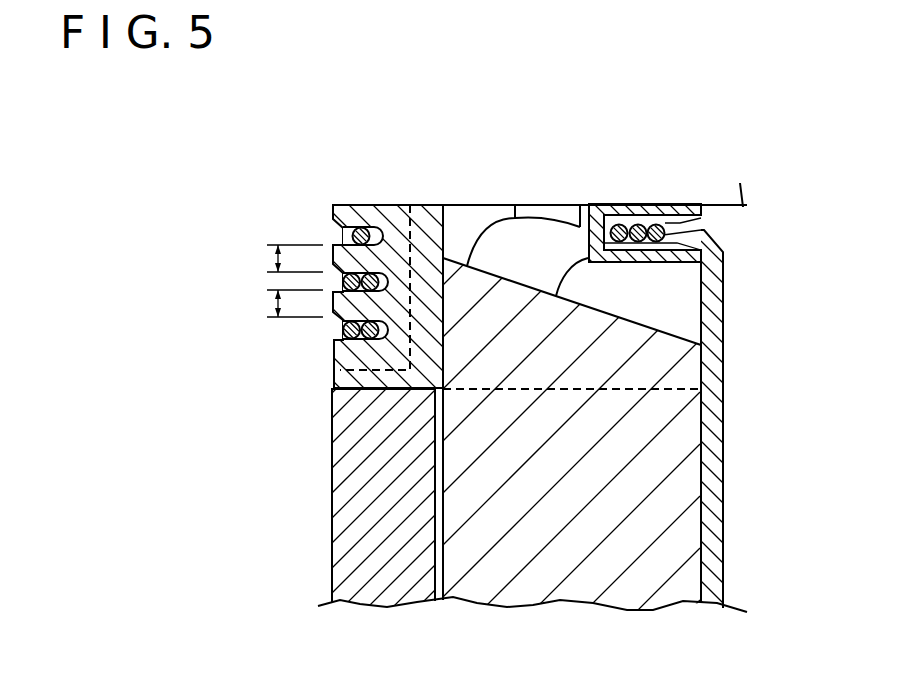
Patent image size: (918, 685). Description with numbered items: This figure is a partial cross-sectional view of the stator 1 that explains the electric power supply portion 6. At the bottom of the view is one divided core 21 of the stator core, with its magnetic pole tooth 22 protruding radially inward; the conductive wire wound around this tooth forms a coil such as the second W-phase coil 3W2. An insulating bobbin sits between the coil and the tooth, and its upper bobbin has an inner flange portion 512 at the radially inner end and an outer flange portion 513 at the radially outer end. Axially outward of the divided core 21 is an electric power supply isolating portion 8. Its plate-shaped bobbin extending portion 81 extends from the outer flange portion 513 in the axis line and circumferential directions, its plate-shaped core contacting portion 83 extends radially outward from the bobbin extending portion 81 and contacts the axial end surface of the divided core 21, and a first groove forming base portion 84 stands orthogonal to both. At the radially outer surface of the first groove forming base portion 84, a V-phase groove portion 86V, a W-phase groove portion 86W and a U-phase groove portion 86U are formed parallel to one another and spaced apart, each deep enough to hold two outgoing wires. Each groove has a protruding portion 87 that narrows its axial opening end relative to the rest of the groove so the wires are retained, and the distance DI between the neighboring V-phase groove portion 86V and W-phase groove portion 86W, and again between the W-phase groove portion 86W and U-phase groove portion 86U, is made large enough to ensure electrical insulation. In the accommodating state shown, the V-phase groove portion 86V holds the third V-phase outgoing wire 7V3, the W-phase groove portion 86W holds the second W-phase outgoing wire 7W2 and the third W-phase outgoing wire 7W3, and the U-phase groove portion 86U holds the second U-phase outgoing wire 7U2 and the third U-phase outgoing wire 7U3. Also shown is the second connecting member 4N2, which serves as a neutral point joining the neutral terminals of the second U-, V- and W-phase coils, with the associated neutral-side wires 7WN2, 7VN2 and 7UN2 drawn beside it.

The stator 1 is at (563, 182).
The electric power supply portion 6 is at (375, 142).
The electric power supply isolating portion 8 is at (367, 195).
The bobbin extending portion 81 is at (433, 222).
The core contacting portion 83 is at (334, 392).
The first groove forming base portion 84 is at (389, 222).
The protruding portion 87 is at (344, 224).
The V-phase groove portion 86V is at (340, 237).
The W-phase groove portion 86W is at (332, 280).
The U-phase groove portion 86U is at (337, 332).
The third V-phase outgoing wire 7V3 is at (340, 228).
The third W-phase outgoing wire 7W3 is at (360, 265).
The second W-phase outgoing wire 7W2 is at (375, 292).
The third U-phase outgoing wire 7U3 is at (337, 340).
The second U-phase outgoing wire 7U2 is at (338, 352).
The distance DI is at (275, 283).
The divided core 21 is at (352, 517).
The magnetic pole tooth 22 is at (585, 577).
The second W-phase coil 3W2 is at (633, 358).
The second connecting member 4N2 is at (656, 215).
The bearing ball W 7WN2 is at (619, 226).
The bearing ball V 7VN2 is at (638, 226).
The bearing ball U 7UN2 is at (664, 226).
The inner flange portion 512 is at (713, 597).
The outer flange portion 513 is at (439, 597).